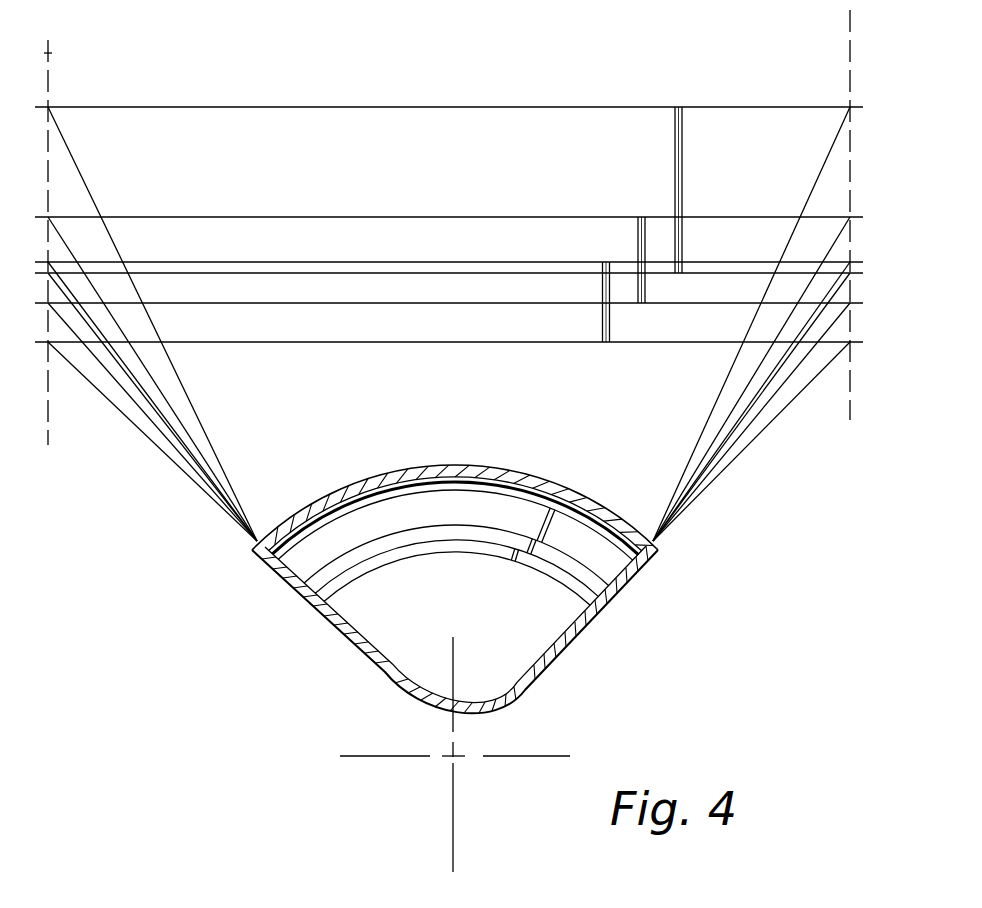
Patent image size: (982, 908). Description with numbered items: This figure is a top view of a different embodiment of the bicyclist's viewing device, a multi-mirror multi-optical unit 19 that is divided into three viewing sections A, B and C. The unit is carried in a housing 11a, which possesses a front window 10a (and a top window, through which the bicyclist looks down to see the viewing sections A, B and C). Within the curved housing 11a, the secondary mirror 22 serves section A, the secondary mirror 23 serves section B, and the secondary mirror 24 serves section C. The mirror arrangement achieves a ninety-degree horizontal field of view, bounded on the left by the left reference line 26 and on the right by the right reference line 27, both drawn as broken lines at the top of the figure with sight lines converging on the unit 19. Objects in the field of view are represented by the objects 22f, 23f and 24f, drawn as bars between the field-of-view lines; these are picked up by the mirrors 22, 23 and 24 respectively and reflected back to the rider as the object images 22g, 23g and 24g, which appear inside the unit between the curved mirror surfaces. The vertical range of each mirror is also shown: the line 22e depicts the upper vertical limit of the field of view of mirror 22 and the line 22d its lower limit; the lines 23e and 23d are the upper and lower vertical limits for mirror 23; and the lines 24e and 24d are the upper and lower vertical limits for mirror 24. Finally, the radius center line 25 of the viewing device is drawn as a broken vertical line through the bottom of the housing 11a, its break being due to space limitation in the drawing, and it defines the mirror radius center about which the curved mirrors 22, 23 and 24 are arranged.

The left reference line 26 is at (48, 53).
The right reference line 27 is at (850, 12).
The upper vertical limit field of view of mirror 22 22e is at (262, 107).
The upper limit vertical field of view of mirror 23 23e is at (268, 217).
The upper limit vertical field of view of mirror 24 24e is at (283, 262).
The lower limit vertical field of view of mirror 22 22d is at (268, 275).
The lower limit vertical field of view of mirror 23 23d is at (330, 304).
The lower limit vertical field of view of mirror 24 24d is at (327, 344).
The object in field of view 22f is at (682, 151).
The object in field of view 23f is at (638, 238).
The object in field of view 24f is at (603, 322).
The multi-mirror multi-optical unit 19 is at (335, 667).
The front window 10a is at (600, 507).
The housing 11a is at (546, 663).
The secondary mirror for section A 22 is at (474, 512).
The secondary mirror for section B 23 is at (403, 538).
The secondary mirror for section C 24 is at (378, 565).
The object image 22g is at (545, 508).
The object image 23g is at (552, 558).
The object image 24g is at (503, 554).
The viewing section A is at (313, 540).
The viewing section B is at (308, 583).
The viewing section C is at (317, 608).
The viewing device radius center line 25 is at (457, 762).